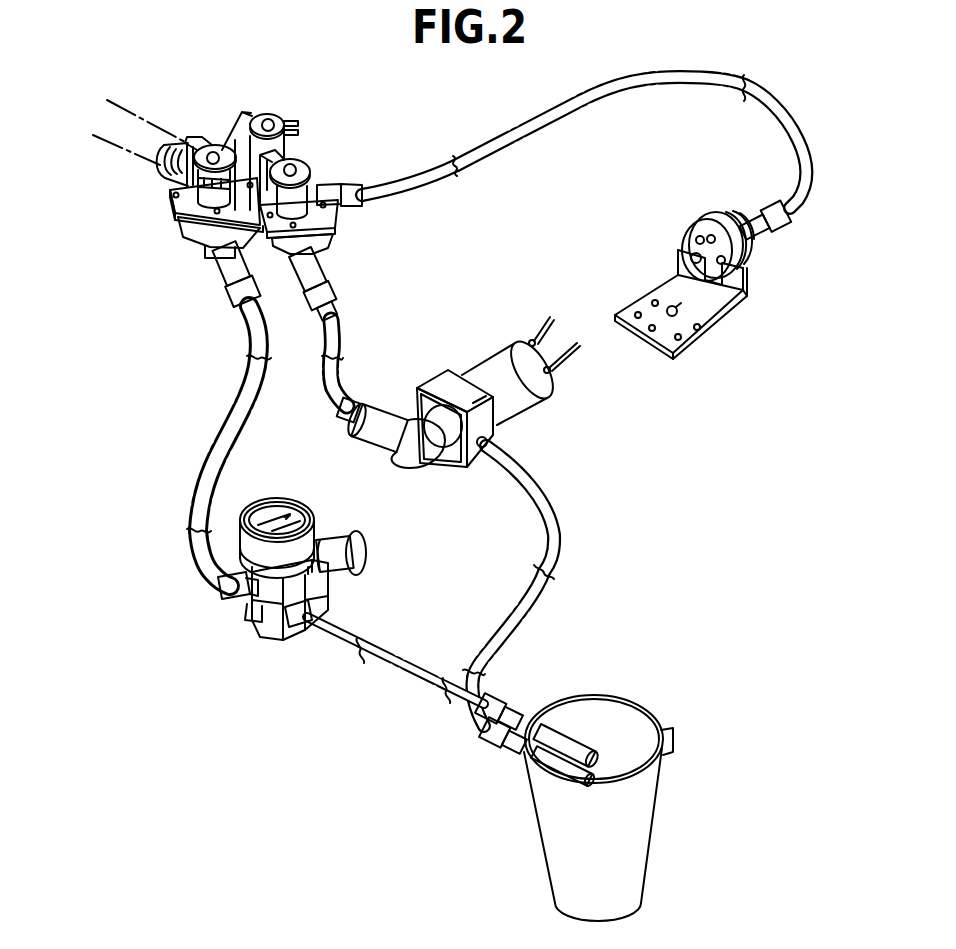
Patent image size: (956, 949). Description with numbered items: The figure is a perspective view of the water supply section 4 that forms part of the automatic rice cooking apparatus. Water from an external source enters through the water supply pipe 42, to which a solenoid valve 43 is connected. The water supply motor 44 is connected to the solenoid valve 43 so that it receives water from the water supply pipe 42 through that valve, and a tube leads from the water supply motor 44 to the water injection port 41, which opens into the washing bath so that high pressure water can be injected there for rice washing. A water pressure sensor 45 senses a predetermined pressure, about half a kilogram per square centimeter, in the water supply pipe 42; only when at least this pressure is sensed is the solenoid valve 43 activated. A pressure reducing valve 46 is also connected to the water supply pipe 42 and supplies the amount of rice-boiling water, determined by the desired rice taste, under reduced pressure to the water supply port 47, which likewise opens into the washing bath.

The water supply section 4 is at (140, 498).
The water injection port 41 is at (557, 767).
The water supply pipe 42 is at (142, 150).
The solenoid valve 43 is at (320, 163).
The water supply motor 44 is at (497, 367).
The water pressure sensor 45 is at (777, 233).
The pressure reducing valve 46 is at (257, 628).
The water supply port 47 is at (527, 757).